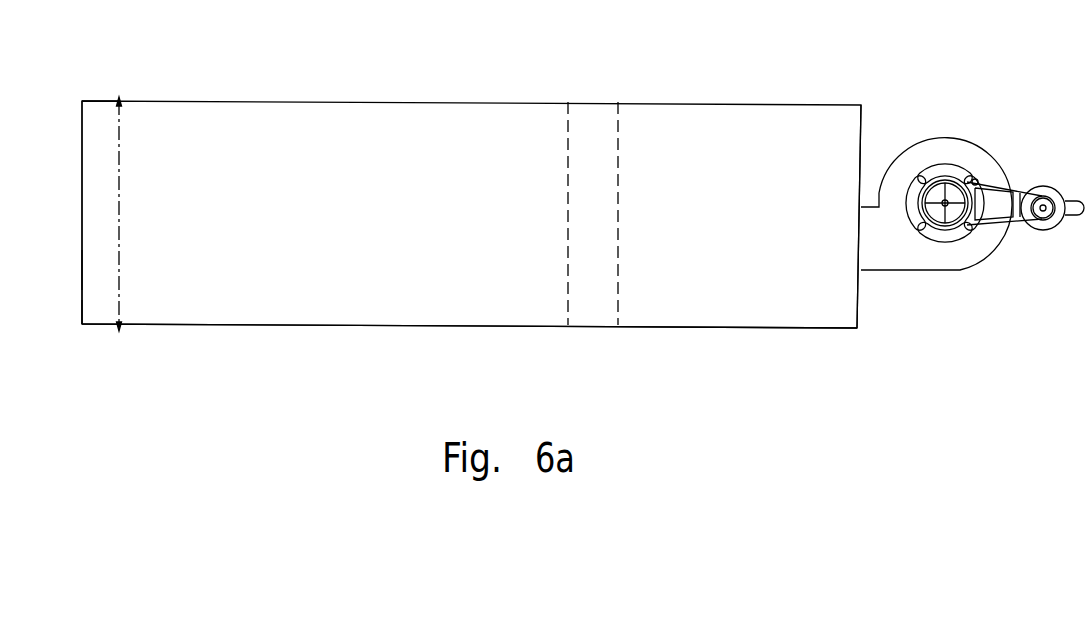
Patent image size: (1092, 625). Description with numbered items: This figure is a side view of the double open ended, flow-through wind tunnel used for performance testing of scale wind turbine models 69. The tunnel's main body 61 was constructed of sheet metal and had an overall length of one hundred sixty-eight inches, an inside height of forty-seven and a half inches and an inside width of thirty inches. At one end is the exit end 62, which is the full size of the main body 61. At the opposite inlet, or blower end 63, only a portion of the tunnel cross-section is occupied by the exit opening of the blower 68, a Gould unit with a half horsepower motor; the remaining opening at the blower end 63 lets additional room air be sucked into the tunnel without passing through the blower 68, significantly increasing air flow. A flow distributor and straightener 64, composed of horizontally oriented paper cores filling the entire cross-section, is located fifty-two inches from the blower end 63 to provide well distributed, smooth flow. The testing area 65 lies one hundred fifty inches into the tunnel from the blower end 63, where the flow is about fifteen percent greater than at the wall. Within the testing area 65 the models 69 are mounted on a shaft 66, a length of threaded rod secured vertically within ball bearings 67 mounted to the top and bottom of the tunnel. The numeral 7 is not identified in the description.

The main body 61 is at (430, 202).
The exit end 62 is at (82, 143).
The blower end 63 is at (862, 127).
The flow distributor and straightener 64 is at (625, 190).
The testing area 65 is at (469, 192).
The shaft 66 is at (111, 193).
The ball bearings 67 is at (59, 78).
The blower 68 is at (973, 198).
The models 69 is at (0, 267).
The frame 7 is at (43, 333).